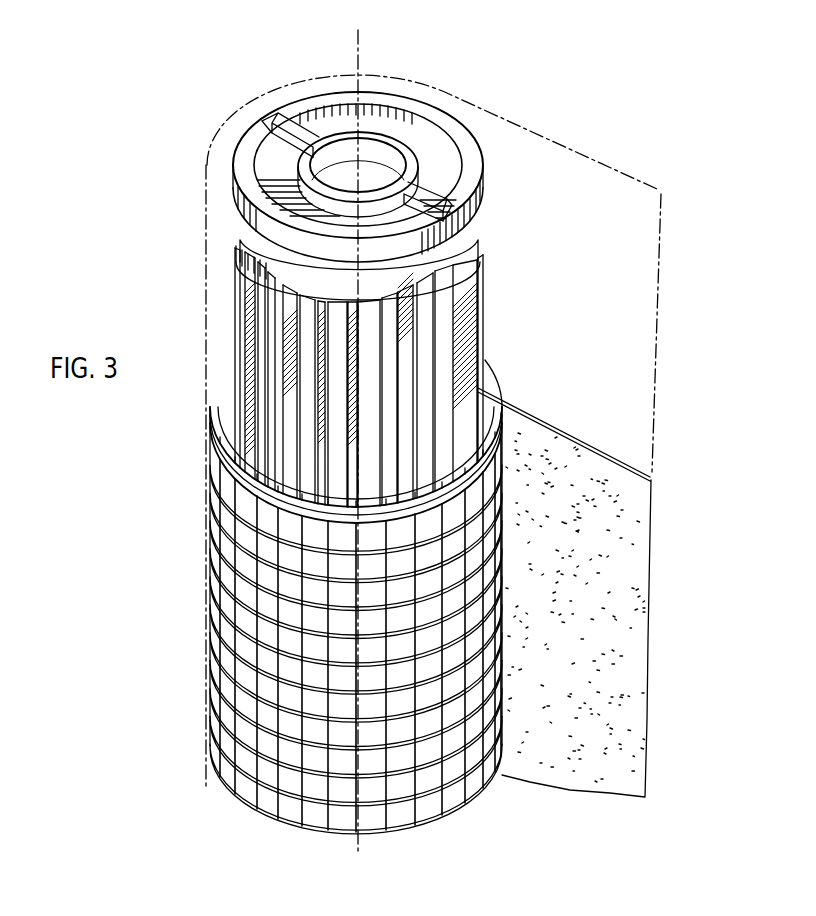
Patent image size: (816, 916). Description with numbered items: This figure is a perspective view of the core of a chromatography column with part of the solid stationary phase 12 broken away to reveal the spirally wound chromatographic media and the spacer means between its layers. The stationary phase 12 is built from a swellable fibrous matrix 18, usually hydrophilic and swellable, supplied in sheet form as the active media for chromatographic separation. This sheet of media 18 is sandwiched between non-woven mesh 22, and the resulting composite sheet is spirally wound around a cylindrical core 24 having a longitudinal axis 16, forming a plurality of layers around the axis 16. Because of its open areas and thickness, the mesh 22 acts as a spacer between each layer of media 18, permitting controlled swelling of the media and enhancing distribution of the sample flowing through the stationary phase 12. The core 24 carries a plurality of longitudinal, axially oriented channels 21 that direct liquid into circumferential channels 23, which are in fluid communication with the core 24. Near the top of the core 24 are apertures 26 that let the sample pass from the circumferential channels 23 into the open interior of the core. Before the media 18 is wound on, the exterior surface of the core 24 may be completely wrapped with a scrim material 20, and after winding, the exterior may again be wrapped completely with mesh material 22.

The stationary phase 12 is at (186, 715).
The longitudinal axis 16 is at (358, 46).
The swellable fibrous matrix 18 is at (577, 464).
The scrim material 20 is at (482, 418).
The longitudinal channels 21 is at (297, 427).
The non-woven mesh 22 is at (253, 593).
The circumferential channels 23 is at (247, 268).
The cylindrical core 24 is at (508, 277).
The apertures 26 is at (387, 178).